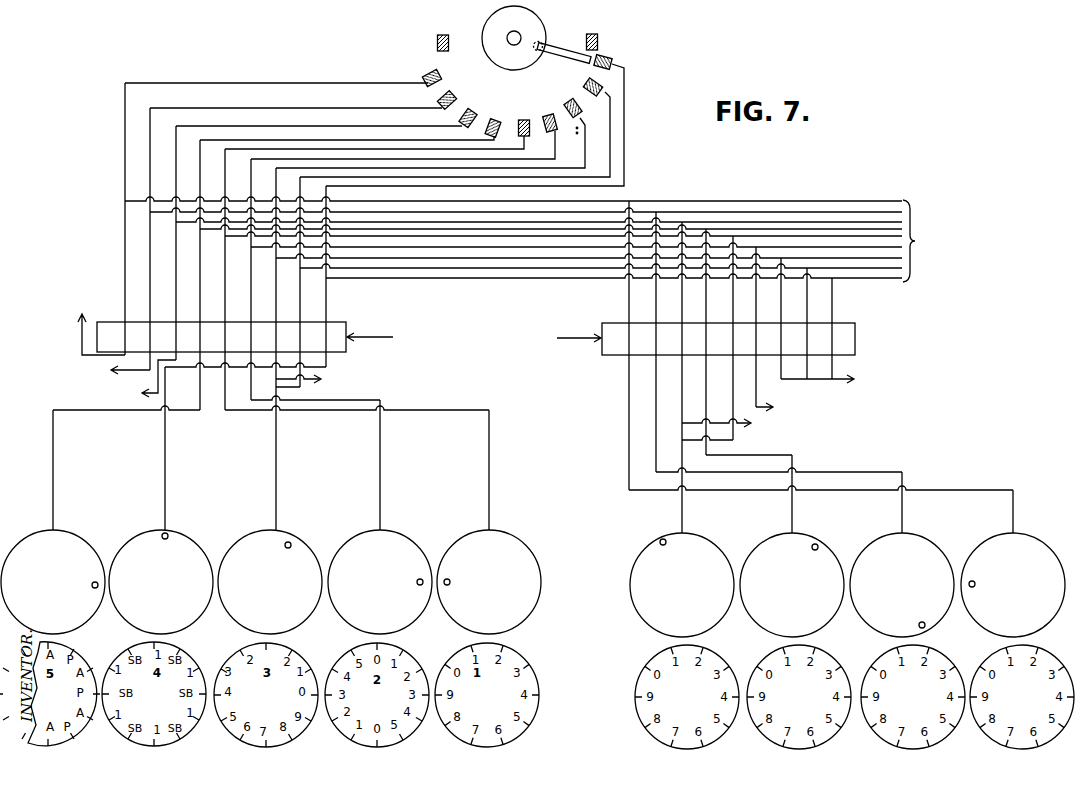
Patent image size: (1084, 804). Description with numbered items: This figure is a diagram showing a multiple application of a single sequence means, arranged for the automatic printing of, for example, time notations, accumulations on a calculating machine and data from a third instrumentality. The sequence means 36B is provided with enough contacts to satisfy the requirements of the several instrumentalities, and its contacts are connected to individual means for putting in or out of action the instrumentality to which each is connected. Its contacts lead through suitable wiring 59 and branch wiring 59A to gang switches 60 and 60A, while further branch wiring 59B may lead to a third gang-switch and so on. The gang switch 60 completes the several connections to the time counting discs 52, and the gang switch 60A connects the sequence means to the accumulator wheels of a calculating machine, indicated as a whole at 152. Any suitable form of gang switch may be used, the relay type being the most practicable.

The sequence means 36B is at (506, 79).
The wiring 59 is at (122, 262).
The branch wiring 59A is at (467, 279).
The further branch wiring 59B is at (881, 279).
The gang switch 60 is at (347, 323).
The gang switch 60A is at (601, 327).
The time counting discs 52 is at (86, 541).
The accumulator wheels of a calculating machine 152 is at (870, 546).